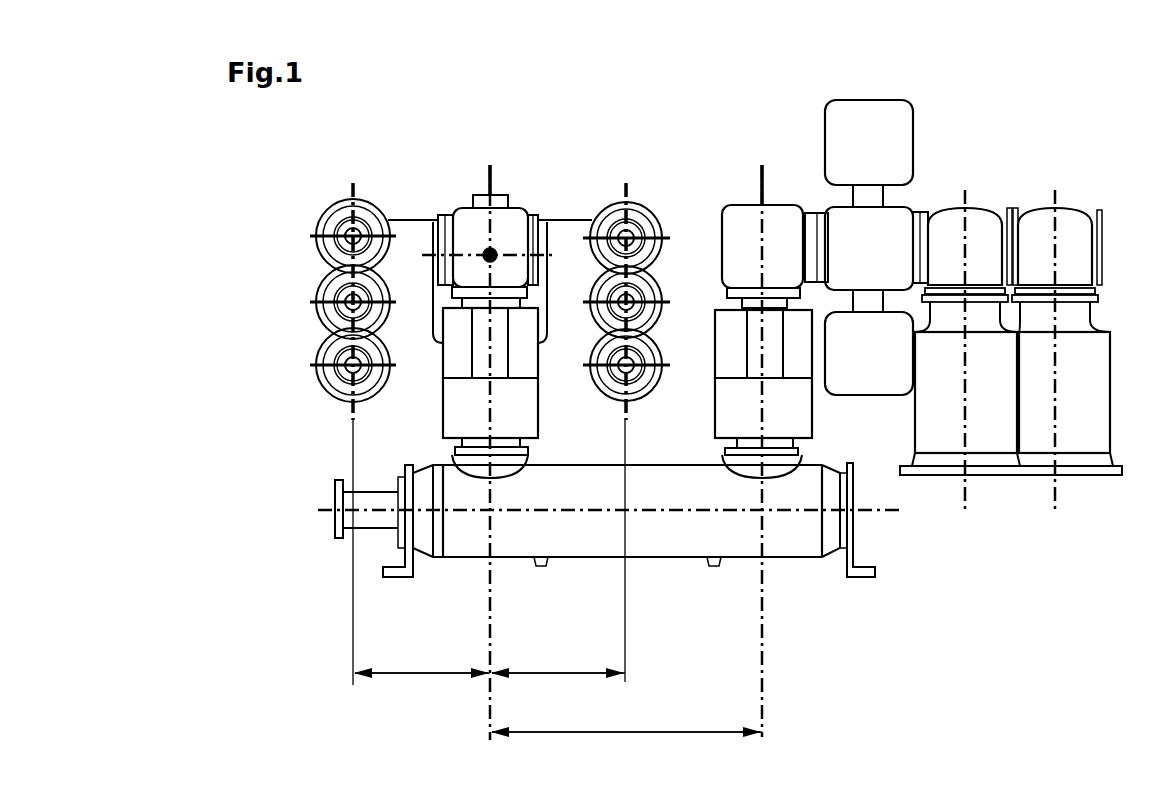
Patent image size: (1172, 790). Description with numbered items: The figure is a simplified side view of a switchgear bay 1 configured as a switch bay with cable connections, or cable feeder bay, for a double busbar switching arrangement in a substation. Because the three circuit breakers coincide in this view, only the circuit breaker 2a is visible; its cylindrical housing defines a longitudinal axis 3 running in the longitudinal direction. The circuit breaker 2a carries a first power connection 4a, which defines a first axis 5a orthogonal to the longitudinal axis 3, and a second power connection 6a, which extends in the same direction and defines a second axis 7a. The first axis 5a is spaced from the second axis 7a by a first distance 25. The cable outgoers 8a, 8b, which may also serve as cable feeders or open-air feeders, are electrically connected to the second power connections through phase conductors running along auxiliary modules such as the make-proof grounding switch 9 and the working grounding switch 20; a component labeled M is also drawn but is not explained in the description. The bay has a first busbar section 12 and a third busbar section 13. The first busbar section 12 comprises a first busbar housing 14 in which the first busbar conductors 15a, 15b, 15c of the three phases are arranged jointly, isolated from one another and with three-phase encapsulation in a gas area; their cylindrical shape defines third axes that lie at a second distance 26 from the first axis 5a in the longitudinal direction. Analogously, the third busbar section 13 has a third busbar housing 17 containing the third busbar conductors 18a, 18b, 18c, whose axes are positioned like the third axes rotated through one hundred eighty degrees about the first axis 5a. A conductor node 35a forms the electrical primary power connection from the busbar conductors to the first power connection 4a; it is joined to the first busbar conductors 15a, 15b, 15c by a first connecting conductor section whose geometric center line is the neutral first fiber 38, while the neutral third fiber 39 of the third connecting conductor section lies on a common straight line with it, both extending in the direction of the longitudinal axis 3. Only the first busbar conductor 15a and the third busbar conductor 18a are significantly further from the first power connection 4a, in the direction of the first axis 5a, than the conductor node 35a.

The switchgear bay 1 is at (1030, 138).
The circuit breaker 2a is at (795, 535).
The longitudinal axis 3 is at (898, 515).
The first power connection 4a is at (503, 470).
The first axis 5a is at (492, 173).
The second power connection 6a is at (747, 468).
The second axis 7a is at (760, 177).
The cable outgoer 8a is at (991, 437).
The cable outgoer 8b is at (1090, 432).
The make-proof grounding switch 9 is at (871, 370).
The motor M is at (873, 123).
The first busbar section 12 is at (643, 187).
The third busbar section 13 is at (371, 187).
The first busbar housing 14 is at (567, 237).
The first busbar conductor 15a is at (628, 238).
The first busbar conductor 15b is at (628, 302).
The first busbar conductor 15c is at (628, 365).
The third busbar housing 17 is at (409, 237).
The third busbar conductor 18a is at (350, 238).
The third busbar conductor 18b is at (350, 303).
The third busbar conductor 18c is at (350, 366).
The working grounding switch 20 is at (778, 232).
The first distance 25 is at (622, 730).
The second distance 26 is at (418, 672).
The conductor node 35a is at (494, 247).
The neutral first fiber 38 is at (548, 237).
The neutral third fiber 39 is at (443, 213).